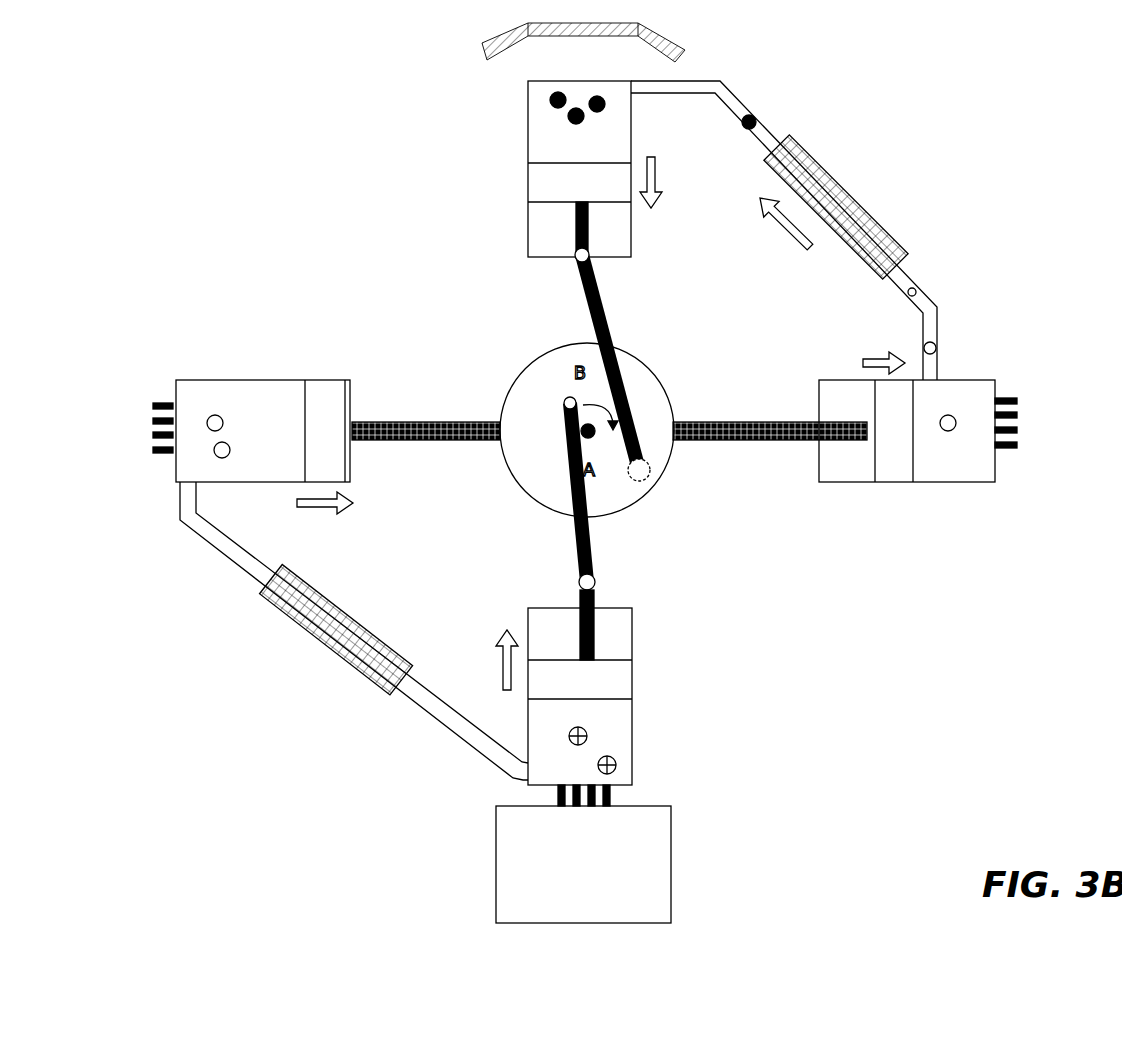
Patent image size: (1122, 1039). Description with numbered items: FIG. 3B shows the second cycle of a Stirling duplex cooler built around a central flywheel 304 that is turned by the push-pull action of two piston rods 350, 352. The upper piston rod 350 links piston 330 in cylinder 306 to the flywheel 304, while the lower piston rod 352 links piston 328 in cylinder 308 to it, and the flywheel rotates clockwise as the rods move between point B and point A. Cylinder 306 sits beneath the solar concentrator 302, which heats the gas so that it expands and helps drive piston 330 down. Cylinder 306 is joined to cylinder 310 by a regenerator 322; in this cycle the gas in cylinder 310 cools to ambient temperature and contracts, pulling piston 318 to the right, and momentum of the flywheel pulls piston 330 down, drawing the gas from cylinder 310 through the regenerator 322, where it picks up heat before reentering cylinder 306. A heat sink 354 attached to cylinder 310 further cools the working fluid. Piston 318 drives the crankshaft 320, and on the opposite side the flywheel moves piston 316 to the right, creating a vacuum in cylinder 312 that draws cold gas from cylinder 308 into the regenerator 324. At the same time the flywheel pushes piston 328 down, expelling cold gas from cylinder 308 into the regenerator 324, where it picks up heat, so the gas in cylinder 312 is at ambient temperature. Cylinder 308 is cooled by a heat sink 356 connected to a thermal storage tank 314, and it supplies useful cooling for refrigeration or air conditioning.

The solar concentrator 302 is at (583, 32).
The flywheel 304 is at (587, 430).
The cylinder 306 is at (555, 169).
The cylinder 308 is at (604, 696).
The cylinder 310 is at (907, 442).
The cylinder 312 is at (263, 417).
The thermal storage tank 314 is at (583, 854).
The piston 316 is at (325, 431).
The piston 318 is at (894, 431).
The crankshaft 320 is at (770, 417).
The regenerator 322 is at (644, 260).
The regenerator 324 is at (354, 631).
The piston 328 is at (580, 644).
The piston 330 is at (579, 209).
The piston rod 350 is at (600, 290).
The piston rod 352 is at (593, 552).
The heat sink 354 is at (1018, 422).
The heat sink 356 is at (143, 421).